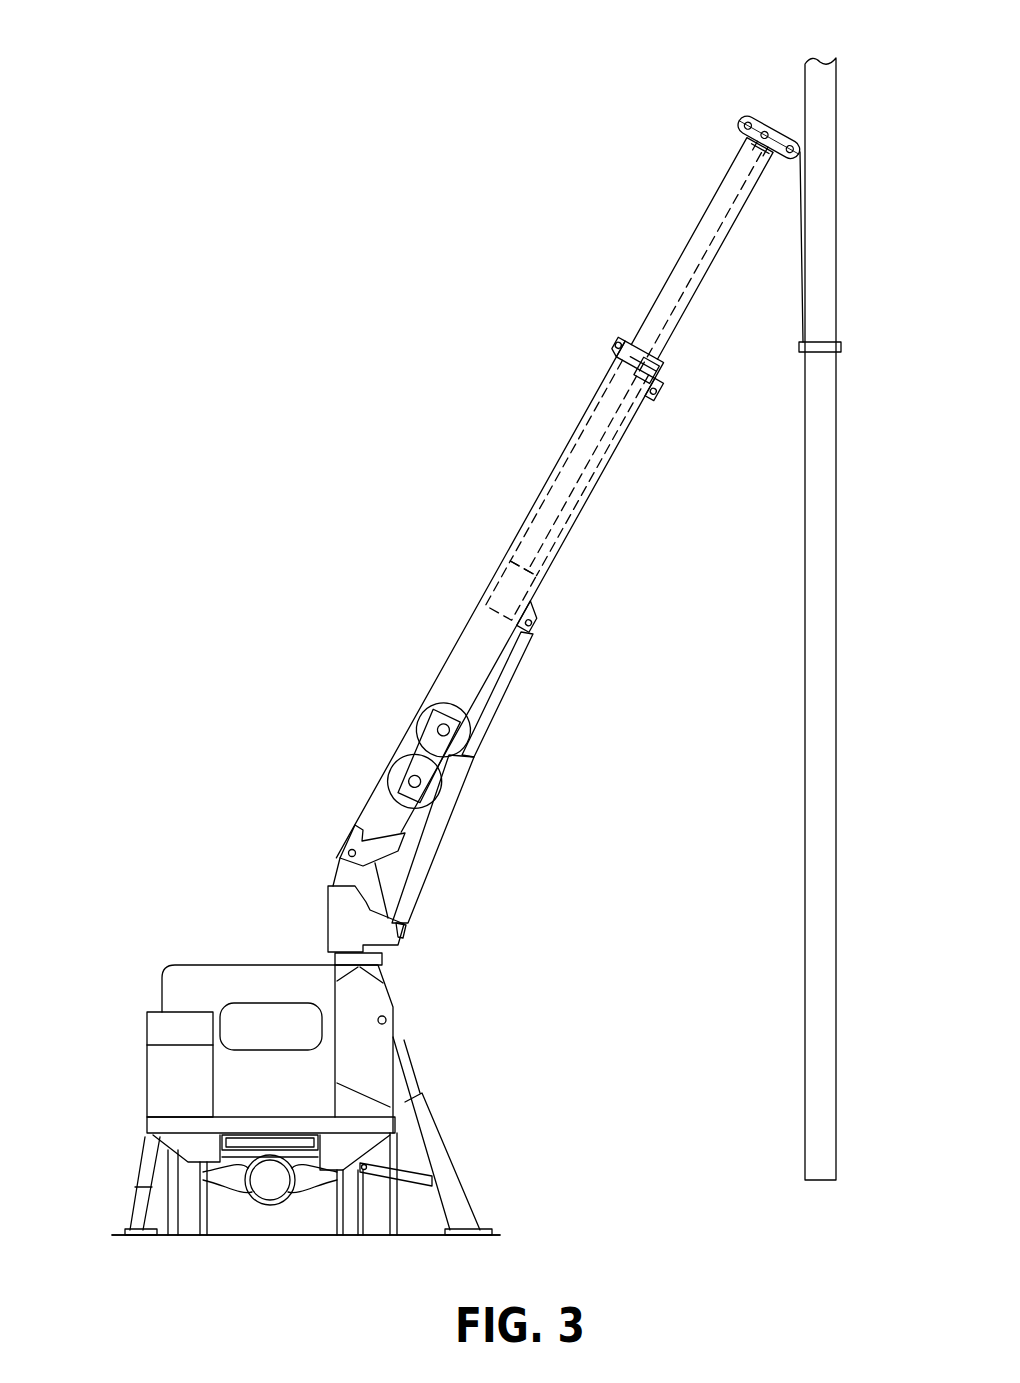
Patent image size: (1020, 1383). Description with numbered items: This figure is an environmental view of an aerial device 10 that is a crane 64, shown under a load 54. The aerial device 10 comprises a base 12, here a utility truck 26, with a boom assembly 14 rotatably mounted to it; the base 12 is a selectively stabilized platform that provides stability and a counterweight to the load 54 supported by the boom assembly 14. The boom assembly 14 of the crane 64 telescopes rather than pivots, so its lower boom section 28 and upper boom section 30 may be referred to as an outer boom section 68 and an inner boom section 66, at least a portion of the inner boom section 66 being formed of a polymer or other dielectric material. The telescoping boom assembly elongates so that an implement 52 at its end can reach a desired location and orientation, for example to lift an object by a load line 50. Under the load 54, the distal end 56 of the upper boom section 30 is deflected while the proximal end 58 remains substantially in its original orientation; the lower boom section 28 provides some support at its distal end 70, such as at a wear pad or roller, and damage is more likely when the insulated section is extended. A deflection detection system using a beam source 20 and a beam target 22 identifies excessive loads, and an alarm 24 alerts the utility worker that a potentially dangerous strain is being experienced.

The aerial device 10 is at (147, 655).
The base 12 is at (108, 984).
The boom assembly 14 is at (342, 392).
The beam source 20 is at (545, 580).
The beam target 22 is at (762, 154).
The alarm 24 is at (120, 1068).
The utility truck 26 is at (190, 978).
The lower boom section 28 is at (545, 532).
The upper boom section 30 is at (741, 182).
The load line 50 is at (805, 198).
The implement 52 is at (733, 85).
The load 54 is at (828, 245).
The distal end of the upper boom section 56 is at (726, 148).
The proximal end of the upper boom section 58 is at (512, 596).
The crane 64 is at (110, 800).
The inner boom section 66 is at (642, 318).
The outer boom section 68 is at (600, 372).
The distal end of the lower boom section 70 is at (658, 408).